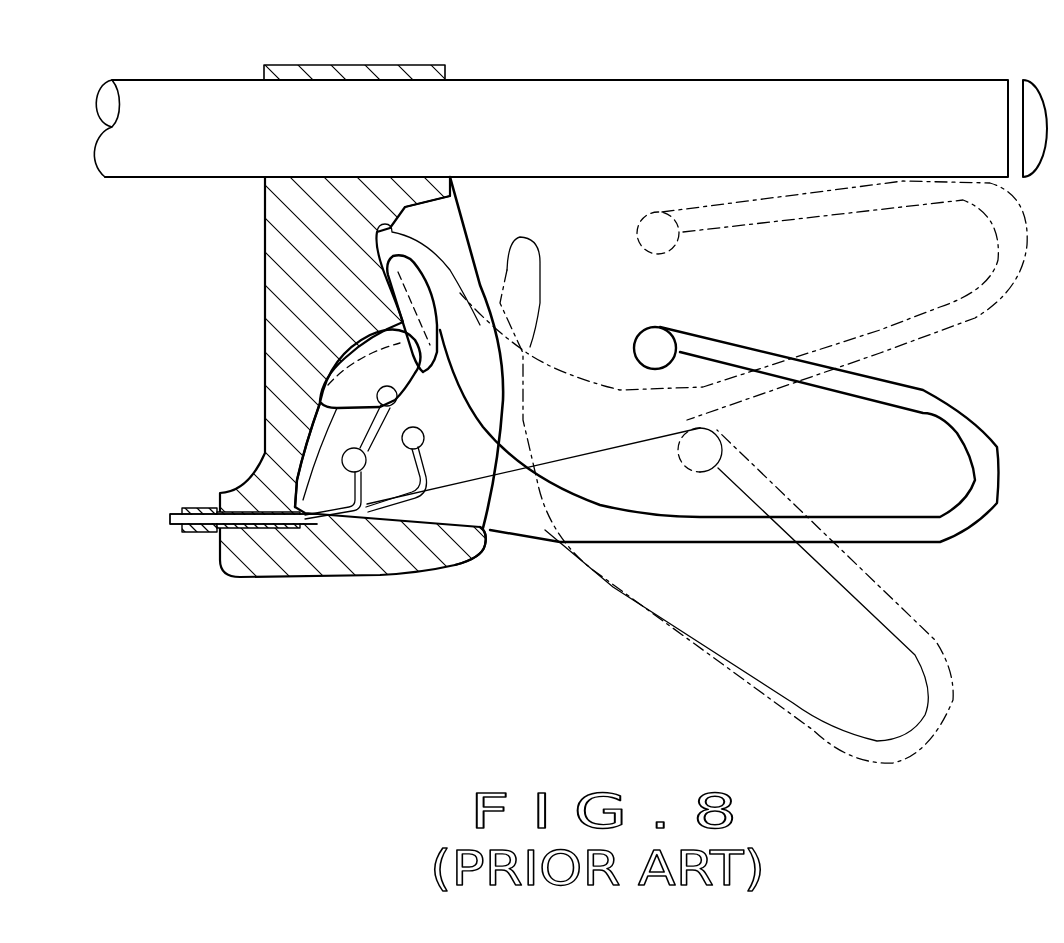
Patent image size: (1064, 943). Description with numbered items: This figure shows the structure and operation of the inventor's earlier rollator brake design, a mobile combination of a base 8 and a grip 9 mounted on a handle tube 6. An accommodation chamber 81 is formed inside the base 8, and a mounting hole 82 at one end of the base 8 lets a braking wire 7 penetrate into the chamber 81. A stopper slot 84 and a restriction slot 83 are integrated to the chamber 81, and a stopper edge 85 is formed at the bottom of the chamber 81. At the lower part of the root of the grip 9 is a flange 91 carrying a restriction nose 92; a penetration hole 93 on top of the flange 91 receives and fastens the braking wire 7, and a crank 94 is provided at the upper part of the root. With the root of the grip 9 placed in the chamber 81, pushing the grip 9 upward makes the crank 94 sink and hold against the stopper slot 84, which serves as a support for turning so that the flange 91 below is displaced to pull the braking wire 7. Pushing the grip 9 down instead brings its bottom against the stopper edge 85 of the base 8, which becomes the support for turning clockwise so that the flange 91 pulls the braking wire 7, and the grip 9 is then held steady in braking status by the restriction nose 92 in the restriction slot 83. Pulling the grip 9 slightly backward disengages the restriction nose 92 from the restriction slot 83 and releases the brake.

The rod 6 is at (925, 93).
The braking wire 7 is at (176, 524).
The base 8 is at (278, 310).
The accommodation chamber 81 is at (440, 228).
The mounting hole 82 is at (293, 507).
The restriction slot 83 is at (318, 407).
The stopper slot 84 is at (376, 237).
The stopper edge 85 is at (492, 535).
The grip 9 is at (722, 528).
The flange 91 is at (330, 473).
The restriction nose 92 is at (308, 497).
The penetration hole 93 is at (378, 437).
The crank 94 is at (420, 293).